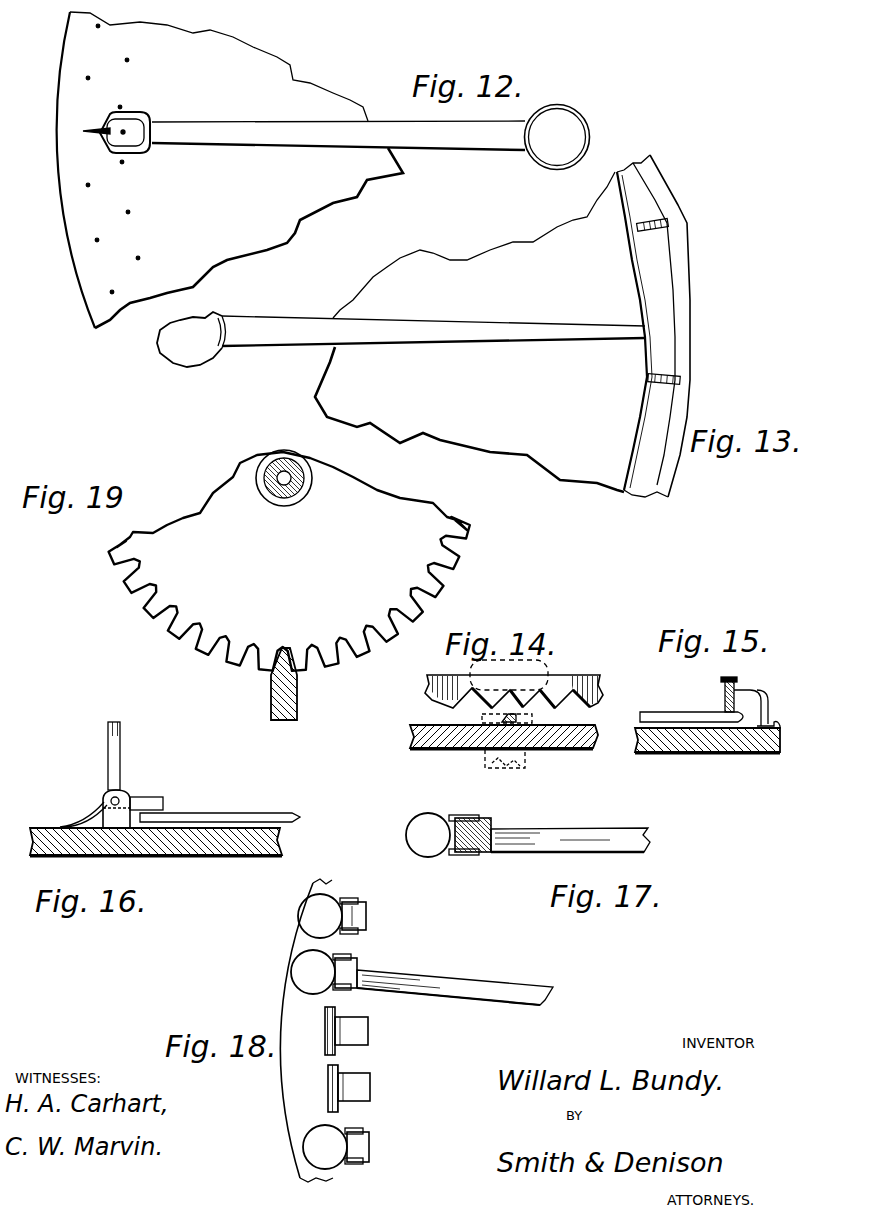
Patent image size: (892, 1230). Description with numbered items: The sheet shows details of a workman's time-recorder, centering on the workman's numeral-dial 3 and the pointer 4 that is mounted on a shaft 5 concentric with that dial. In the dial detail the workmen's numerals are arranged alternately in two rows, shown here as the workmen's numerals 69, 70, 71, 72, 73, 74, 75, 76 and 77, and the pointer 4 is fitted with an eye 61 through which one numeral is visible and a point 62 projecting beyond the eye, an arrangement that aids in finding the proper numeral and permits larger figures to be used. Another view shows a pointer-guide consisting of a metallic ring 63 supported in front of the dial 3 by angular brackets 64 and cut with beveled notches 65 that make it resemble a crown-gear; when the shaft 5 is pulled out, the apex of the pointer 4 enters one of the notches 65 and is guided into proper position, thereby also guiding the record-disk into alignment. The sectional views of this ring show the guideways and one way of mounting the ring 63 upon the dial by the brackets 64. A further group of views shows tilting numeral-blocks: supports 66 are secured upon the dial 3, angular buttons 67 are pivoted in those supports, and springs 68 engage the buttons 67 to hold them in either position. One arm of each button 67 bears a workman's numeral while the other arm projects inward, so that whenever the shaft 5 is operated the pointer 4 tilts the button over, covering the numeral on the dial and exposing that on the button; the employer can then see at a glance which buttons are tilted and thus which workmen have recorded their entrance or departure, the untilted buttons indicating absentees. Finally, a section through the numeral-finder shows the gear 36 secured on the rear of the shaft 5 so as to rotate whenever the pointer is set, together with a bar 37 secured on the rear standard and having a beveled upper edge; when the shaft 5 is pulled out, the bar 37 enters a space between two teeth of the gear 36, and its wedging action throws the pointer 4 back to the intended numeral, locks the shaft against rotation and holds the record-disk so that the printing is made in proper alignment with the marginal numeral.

In FIG. 12, the workman's numeral-dial 3 is at (230, 170).
In FIG. 13, the workman's numeral-dial 3 is at (502, 327).
In FIG. 14, the workman's numeral-dial 3 is at (504, 749).
In FIG. 15, the workman's numeral-dial 3 is at (707, 751).
In FIG. 16, the workman's numeral-dial 3 is at (156, 842).
In FIG. 12, the pointer 4 is at (371, 137).
In FIG. 13, the pointer 4 is at (401, 339).
In FIG. 14, the pointer 4 is at (516, 712).
In FIG. 15, the pointer 4 is at (691, 706).
In FIG. 16, the pointer 4 is at (220, 805).
In FIG. 17, the pointer 4 is at (570, 827).
In FIG. 18, the pointer 4 is at (455, 979).
In FIG. 19, the shaft 5 is at (300, 490).
In FIG. 19, the gear 36 is at (289, 561).
In FIG. 19, the bar 37 is at (299, 684).
In FIG. 12, the eye 61 is at (147, 124).
In FIG. 12, the point 62 is at (83, 131).
In FIG. 13, the metallic ring 63 is at (643, 392).
In FIG. 14, the metallic ring 63 is at (519, 681).
In FIG. 15, the metallic ring 63 is at (724, 682).
In FIG. 13, the angular brackets 64 is at (668, 224).
In FIG. 15, the angular brackets 64 is at (762, 702).
In FIG. 14, the beveled notches 65 is at (450, 704).
In FIG. 16, the supports 66 is at (102, 807).
In FIG. 17, the supports 66 is at (470, 848).
In FIG. 12, the angular buttons 67 is at (133, 282).
In FIG. 16, the angular buttons 67 is at (146, 766).
In FIG. 17, the angular buttons 67 is at (421, 825).
In FIG. 18, the angular buttons 67 is at (298, 914).
In FIG. 12, the springs 68 is at (115, 267).
In FIG. 16, the springs 68 is at (73, 806).
In FIG. 12, the hole 69 is at (119, 237).
In FIG. 12, the hole 70 is at (104, 217).
In FIG. 12, the hole 71 is at (110, 188).
In FIG. 12, the hole 72 is at (98, 160).
In FIG. 12, the center hole 73 is at (125, 132).
In FIG. 12, the hole 74 is at (99, 103).
In FIG. 12, the hole 75 is at (111, 82).
In FIG. 12, the hole 76 is at (104, 53).
In FIG. 12, the hole 77 is at (121, 35).